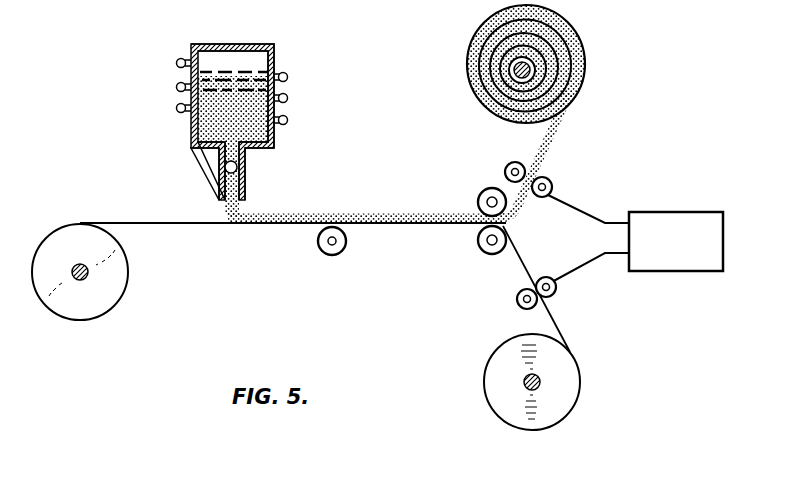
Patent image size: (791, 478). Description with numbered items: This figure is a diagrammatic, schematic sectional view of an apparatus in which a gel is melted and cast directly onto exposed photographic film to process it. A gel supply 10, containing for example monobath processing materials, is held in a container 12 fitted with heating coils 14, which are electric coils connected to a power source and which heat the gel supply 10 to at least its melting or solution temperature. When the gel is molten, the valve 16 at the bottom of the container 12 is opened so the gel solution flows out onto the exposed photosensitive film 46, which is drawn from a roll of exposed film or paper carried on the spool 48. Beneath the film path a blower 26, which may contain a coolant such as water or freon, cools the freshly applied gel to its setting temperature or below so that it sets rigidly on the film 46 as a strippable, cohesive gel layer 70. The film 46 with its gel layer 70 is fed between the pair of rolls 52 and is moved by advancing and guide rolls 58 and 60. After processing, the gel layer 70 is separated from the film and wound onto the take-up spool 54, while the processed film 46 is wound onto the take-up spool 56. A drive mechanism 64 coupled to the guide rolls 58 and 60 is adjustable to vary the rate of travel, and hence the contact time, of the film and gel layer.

The gel 10 is at (268, 130).
The container 12 is at (191, 145).
The heating coils 14 is at (176, 63).
The valve 16 is at (238, 166).
The blower 26 is at (333, 256).
The exposed photographic film 46 is at (153, 222).
The spool 48 is at (73, 268).
The rolls 52 is at (480, 196).
The take-up spool 54 is at (516, 69).
The take-up spool 56 is at (524, 388).
The advancing and guide rolls 58 is at (526, 310).
The advancing and guide rolls 60 is at (516, 162).
The drive mechanism 64 is at (688, 254).
The coated web 70 is at (395, 213).